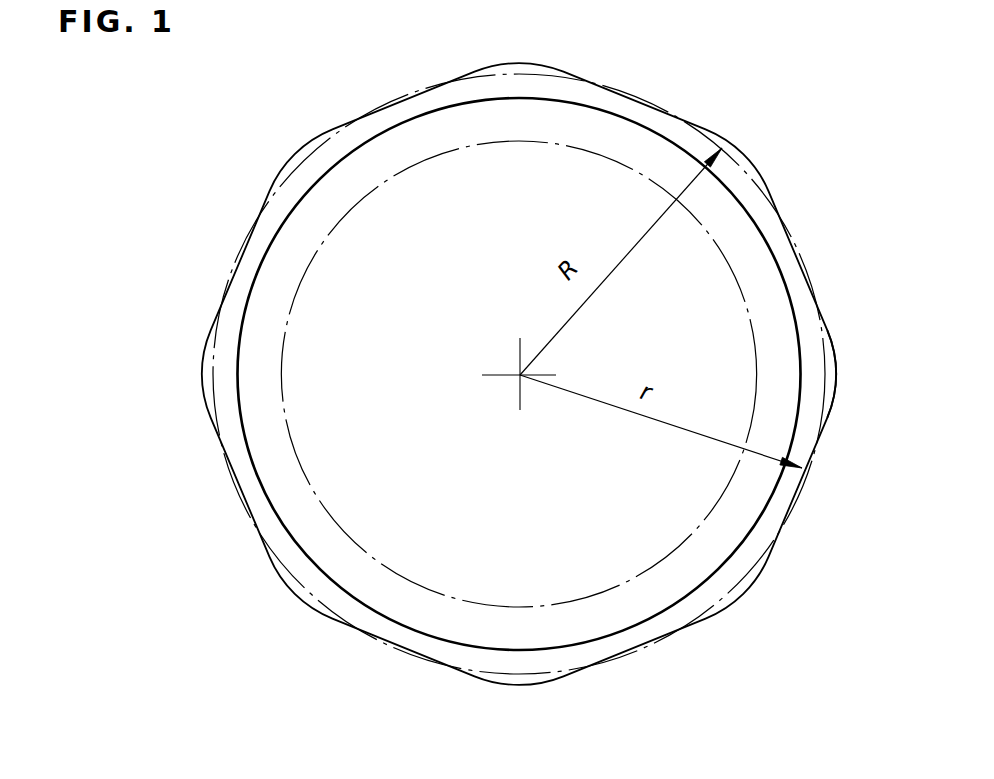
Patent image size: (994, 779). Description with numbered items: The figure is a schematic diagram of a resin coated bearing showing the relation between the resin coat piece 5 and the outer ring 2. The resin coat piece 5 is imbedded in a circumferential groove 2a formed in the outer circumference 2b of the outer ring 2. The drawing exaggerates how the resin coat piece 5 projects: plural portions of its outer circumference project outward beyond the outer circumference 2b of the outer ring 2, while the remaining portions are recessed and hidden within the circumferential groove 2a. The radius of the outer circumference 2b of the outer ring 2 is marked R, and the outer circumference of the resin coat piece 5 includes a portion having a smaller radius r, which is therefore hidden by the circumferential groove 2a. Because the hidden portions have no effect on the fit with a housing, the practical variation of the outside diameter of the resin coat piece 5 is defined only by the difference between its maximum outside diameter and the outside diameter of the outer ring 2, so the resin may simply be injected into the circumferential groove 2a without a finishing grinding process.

The outer ring 2 is at (442, 592).
The circumferential groove 2a is at (729, 568).
The outer circumference 2b is at (627, 657).
The resin coat piece 5 is at (834, 342).